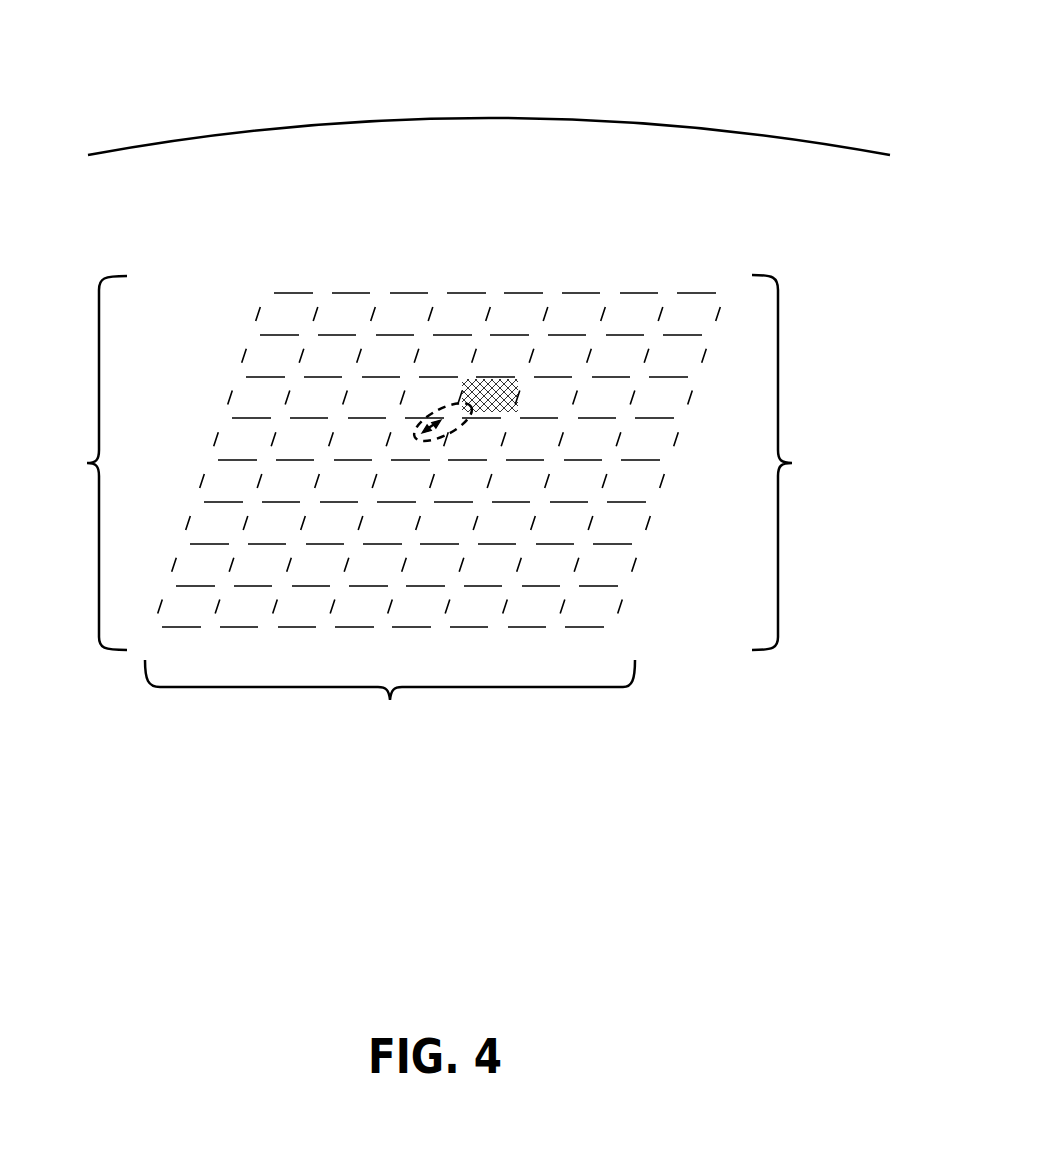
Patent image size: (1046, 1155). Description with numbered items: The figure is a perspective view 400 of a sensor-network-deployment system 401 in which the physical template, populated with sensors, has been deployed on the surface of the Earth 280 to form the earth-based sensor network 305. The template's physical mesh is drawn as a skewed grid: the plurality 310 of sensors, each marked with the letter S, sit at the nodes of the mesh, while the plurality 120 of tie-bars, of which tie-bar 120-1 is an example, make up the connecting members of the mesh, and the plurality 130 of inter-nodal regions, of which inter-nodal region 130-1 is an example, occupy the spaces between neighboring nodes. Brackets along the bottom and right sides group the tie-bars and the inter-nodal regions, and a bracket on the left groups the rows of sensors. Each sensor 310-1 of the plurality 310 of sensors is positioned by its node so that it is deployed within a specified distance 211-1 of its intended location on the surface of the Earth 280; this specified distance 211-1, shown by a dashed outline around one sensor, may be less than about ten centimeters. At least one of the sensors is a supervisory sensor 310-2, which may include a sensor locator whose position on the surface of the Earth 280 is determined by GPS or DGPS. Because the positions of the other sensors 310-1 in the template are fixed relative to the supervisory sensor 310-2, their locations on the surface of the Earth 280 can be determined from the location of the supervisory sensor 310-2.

The perspective view 400 is at (196, 89).
The surface of the Earth 280 is at (690, 117).
The sensor-network-deployment system 401 is at (668, 241).
The earth-based sensor network 305 is at (283, 279).
The plurality of sensors 310 is at (84, 463).
The plurality of inter-nodal regions 130 is at (798, 462).
The plurality of tie-bars 120 is at (390, 699).
The specified distance 211-1 is at (429, 409).
The sensor 310-1 is at (452, 396).
The supervisory sensor 310-2 is at (528, 406).
The inter-nodal region 130-1 is at (492, 418).
The tie-bar 120-1 is at (483, 407).